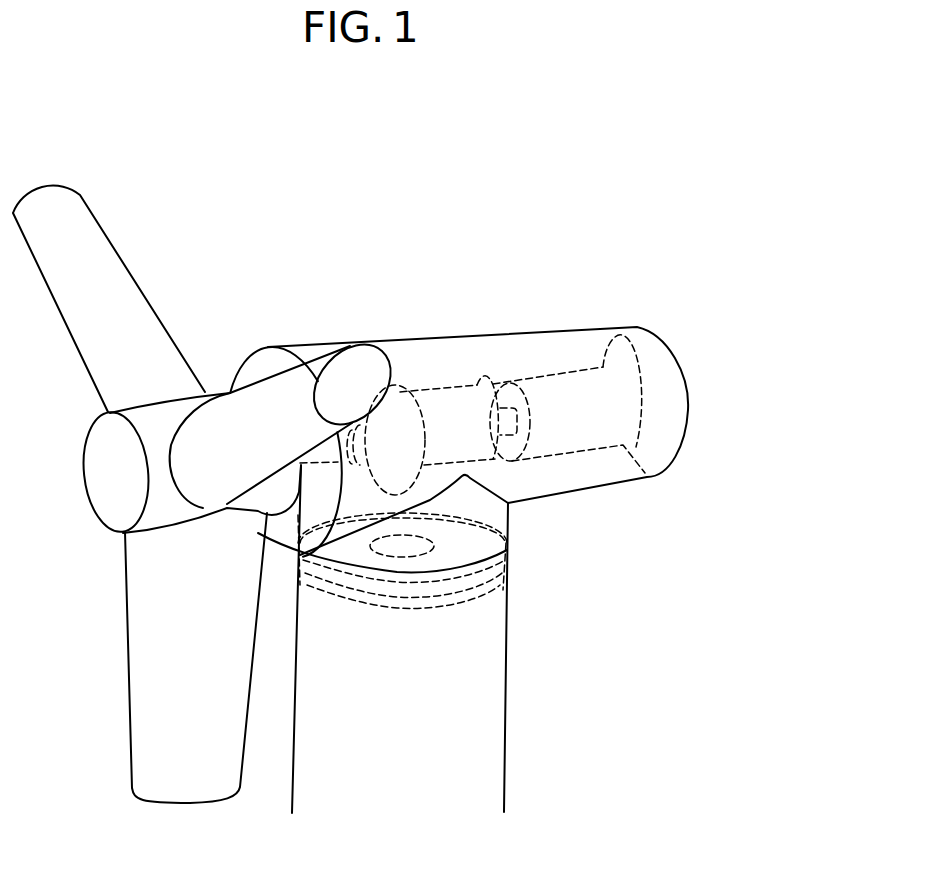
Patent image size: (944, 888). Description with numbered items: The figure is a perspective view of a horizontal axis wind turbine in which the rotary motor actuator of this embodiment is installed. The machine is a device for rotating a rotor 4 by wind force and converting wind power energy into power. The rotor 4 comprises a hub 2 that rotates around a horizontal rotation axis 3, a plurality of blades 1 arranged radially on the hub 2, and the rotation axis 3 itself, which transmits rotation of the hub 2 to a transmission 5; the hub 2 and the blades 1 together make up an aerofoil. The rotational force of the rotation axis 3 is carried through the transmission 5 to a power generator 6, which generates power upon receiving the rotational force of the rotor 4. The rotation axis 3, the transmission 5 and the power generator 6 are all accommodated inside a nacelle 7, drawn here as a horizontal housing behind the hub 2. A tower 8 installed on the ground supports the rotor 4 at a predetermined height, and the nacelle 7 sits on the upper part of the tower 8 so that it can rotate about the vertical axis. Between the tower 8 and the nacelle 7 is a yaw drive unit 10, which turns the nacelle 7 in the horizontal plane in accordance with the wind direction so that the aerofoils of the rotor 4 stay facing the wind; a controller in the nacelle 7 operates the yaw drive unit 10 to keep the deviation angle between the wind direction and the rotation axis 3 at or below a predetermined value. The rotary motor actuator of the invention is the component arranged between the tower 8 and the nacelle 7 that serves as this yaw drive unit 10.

The blades 1 is at (128, 327).
The hub 2 is at (160, 417).
The rotation axis 3 is at (350, 425).
The rotor 4 is at (200, 223).
The transmission 5 is at (394, 395).
The power generator 6 is at (566, 390).
The nacelle 7 is at (477, 352).
The tower 8 is at (470, 707).
The yaw drive unit 10 is at (450, 562).